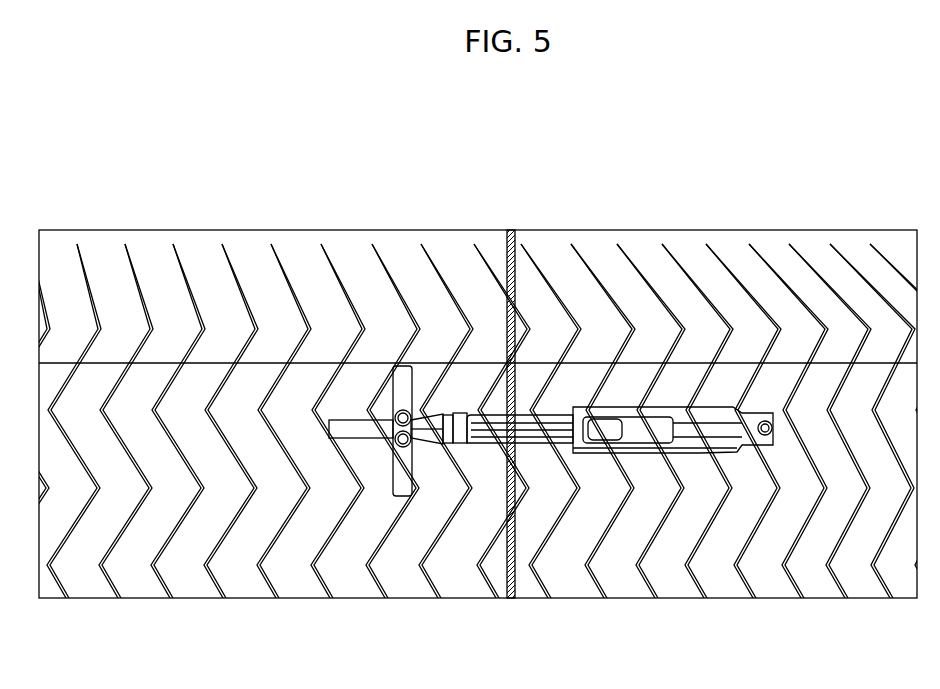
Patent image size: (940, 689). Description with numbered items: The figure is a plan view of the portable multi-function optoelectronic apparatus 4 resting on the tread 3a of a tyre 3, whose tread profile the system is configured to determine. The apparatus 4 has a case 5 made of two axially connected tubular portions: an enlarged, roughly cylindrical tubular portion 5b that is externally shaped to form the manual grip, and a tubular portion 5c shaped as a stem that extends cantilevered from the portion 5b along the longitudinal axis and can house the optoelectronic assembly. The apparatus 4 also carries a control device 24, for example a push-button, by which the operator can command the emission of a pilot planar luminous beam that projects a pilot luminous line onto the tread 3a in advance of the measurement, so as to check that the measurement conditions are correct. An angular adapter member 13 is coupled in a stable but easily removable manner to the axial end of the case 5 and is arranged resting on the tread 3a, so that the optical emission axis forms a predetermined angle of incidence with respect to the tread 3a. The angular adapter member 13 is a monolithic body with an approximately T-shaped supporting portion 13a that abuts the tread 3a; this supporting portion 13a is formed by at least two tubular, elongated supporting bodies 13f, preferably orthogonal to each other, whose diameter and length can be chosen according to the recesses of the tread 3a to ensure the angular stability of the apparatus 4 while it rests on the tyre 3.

The tyre 3 is at (470, 407).
The tread profile 3a is at (775, 262).
The portable multi-function optoelectronic apparatus 4 is at (744, 468).
The case 5 is at (771, 421).
The tubular portion 5b is at (605, 455).
The tubular portion 5c is at (450, 446).
The angular adapter member 13 is at (420, 358).
The supporting portion 13a is at (387, 492).
The supporting bodies 13f is at (397, 408).
The control device 24 is at (612, 405).